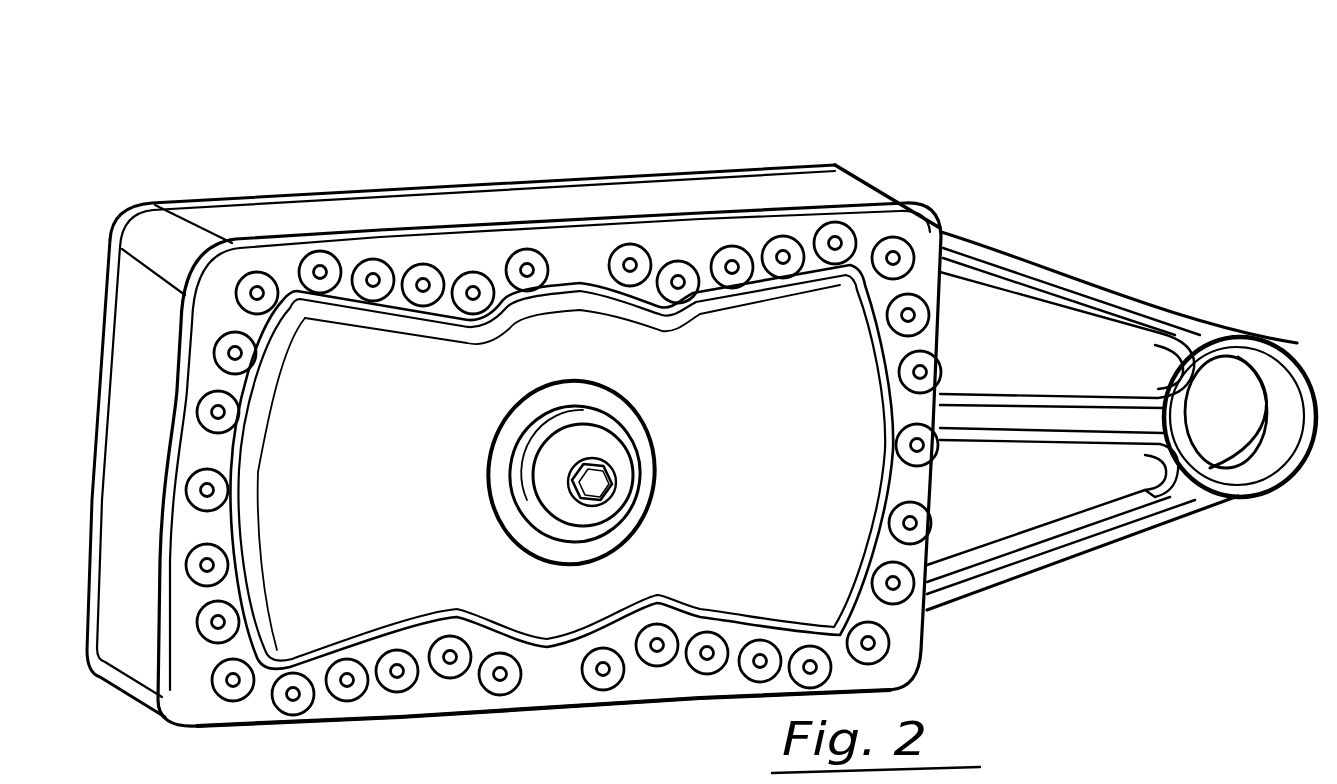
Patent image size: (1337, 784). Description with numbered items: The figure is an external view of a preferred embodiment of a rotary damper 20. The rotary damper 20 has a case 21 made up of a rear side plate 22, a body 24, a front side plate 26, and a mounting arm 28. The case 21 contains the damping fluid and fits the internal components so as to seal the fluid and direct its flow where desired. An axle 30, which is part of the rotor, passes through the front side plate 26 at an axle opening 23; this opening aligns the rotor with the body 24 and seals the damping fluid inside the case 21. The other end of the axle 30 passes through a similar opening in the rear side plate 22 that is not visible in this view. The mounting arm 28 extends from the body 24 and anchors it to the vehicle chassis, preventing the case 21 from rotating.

The rotary damper 20 is at (548, 92).
The case 21 is at (311, 190).
The rear side plate 22 is at (677, 175).
The axle opening 23 is at (640, 493).
The body 24 is at (837, 190).
The front side plate 26 is at (920, 243).
The mounting arm 28 is at (1197, 507).
The axle 30 is at (600, 450).